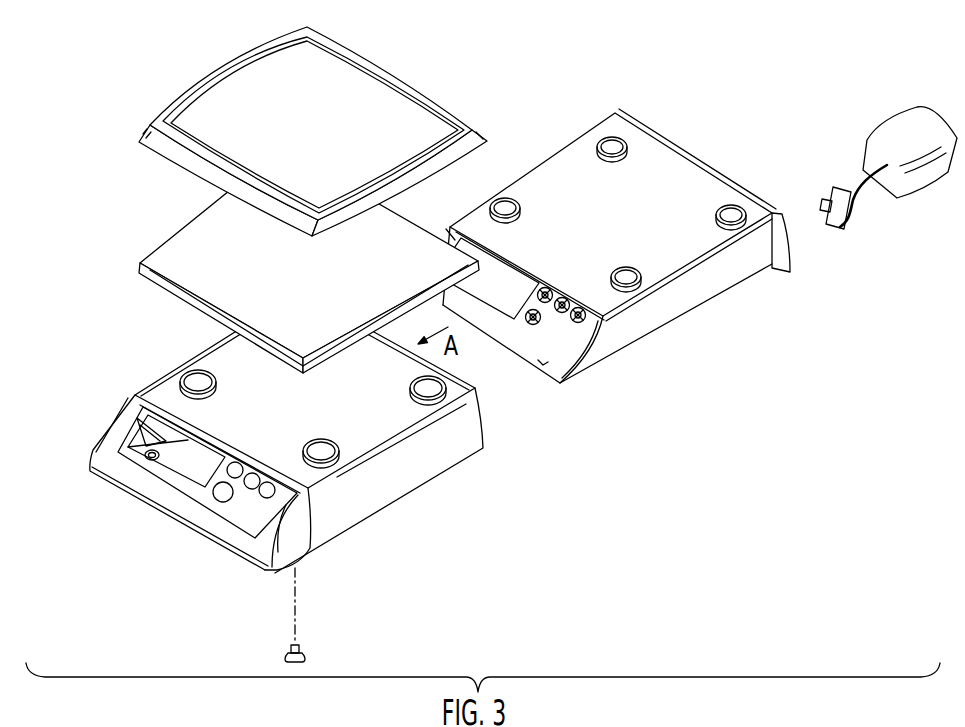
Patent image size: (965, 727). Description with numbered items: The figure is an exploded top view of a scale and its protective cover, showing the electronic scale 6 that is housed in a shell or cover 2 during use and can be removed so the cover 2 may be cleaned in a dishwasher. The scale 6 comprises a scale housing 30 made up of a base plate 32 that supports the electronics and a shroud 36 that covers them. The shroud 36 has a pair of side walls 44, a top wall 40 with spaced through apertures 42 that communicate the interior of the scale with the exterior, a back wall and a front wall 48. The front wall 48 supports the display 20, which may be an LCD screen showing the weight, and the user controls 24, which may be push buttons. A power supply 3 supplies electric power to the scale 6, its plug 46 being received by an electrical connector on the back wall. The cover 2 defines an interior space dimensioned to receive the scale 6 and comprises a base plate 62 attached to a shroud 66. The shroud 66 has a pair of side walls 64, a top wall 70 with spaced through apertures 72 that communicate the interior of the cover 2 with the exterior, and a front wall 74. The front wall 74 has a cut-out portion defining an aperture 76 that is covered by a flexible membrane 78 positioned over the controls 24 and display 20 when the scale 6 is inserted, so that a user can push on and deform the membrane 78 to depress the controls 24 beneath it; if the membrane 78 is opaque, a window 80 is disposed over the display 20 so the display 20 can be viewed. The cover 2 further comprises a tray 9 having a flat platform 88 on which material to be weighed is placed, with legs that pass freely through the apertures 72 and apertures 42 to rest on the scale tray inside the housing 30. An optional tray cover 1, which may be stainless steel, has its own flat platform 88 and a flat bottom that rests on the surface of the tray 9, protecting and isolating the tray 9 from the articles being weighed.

The tray cover 1 is at (402, 80).
The cover 2 is at (287, 476).
The power supply 3 is at (927, 173).
The electronic scale 6 is at (606, 247).
The tray 9 is at (283, 260).
The display 20 is at (502, 302).
The user controls 24 is at (548, 303).
The scale housing 30 is at (606, 247).
The base plate 32 is at (542, 365).
The shroud 36 is at (606, 247).
The top wall 40 is at (645, 167).
The apertures 42 is at (509, 203).
The side walls 44 is at (602, 328).
The plug 46 is at (827, 200).
The front wall 48 is at (448, 227).
The base plate 62 is at (333, 540).
The side walls 64 is at (434, 457).
The shroud 66 is at (287, 389).
The top wall 70 is at (227, 352).
The apertures 72 is at (203, 379).
The front wall 74 is at (231, 467).
The aperture 76 is at (150, 473).
The flexible membrane 78 is at (192, 502).
The window 80 is at (177, 478).
The platform 88 is at (203, 230).